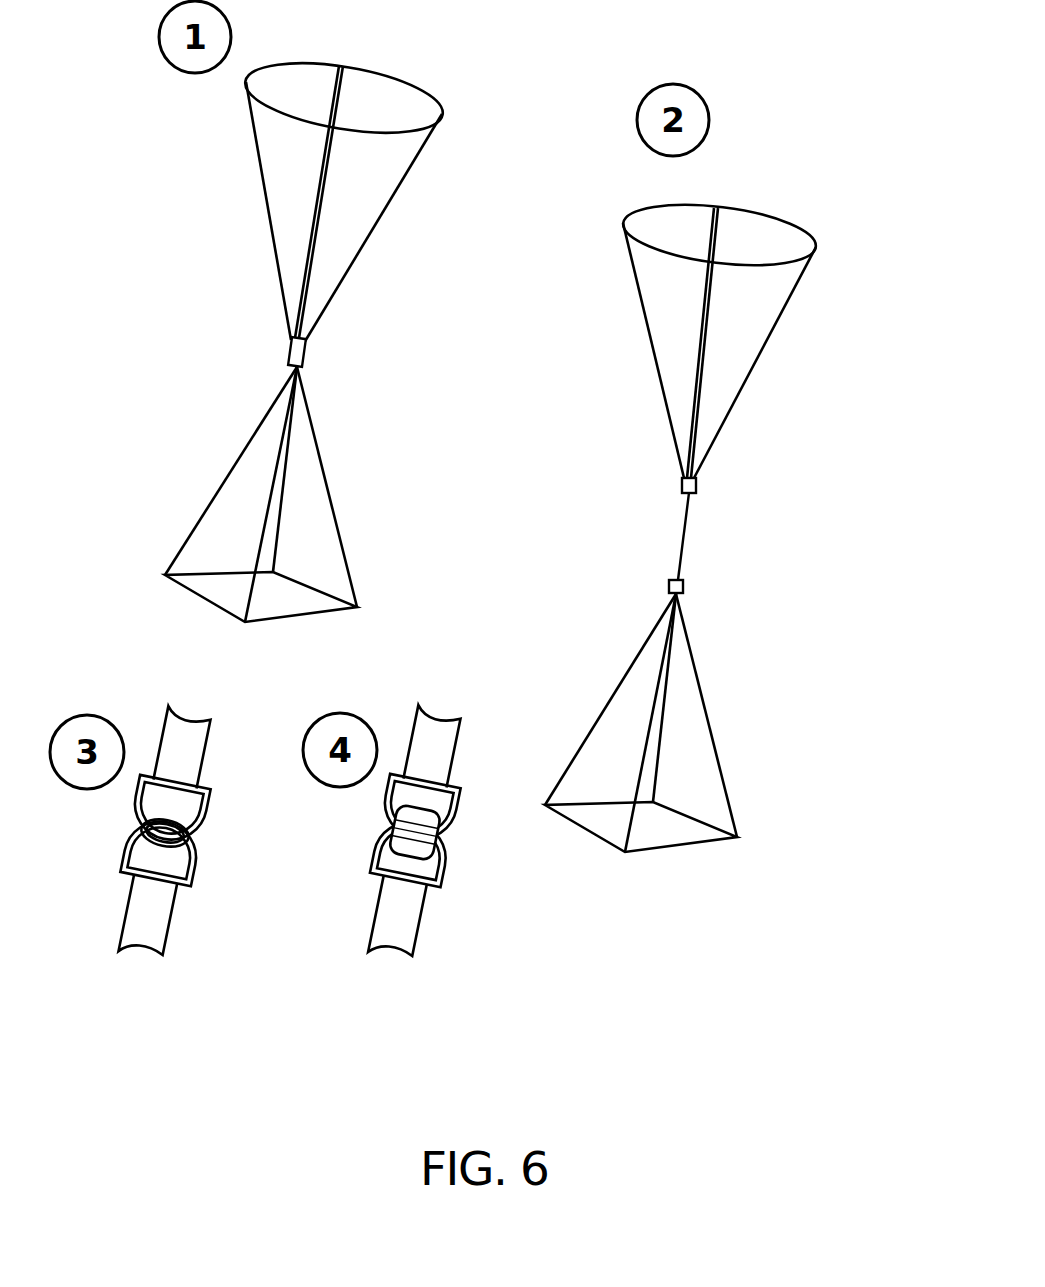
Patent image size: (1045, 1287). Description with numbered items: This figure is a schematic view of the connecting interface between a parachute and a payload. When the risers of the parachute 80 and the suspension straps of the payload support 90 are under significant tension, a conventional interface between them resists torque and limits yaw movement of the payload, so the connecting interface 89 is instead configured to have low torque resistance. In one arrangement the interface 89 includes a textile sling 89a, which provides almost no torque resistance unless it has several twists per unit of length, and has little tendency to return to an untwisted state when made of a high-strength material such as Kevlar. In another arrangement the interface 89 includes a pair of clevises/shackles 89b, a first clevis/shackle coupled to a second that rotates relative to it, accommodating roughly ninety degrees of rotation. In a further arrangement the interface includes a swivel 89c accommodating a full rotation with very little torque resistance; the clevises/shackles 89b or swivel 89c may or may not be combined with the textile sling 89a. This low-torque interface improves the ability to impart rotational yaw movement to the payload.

The parachute 80 is at (472, 253).
The payload support 90 is at (417, 512).
The connecting interface 89 is at (326, 357).
The textile sling 89a is at (703, 558).
The pair of clevises/shackles 89b is at (97, 854).
The swivel 89c is at (480, 881).